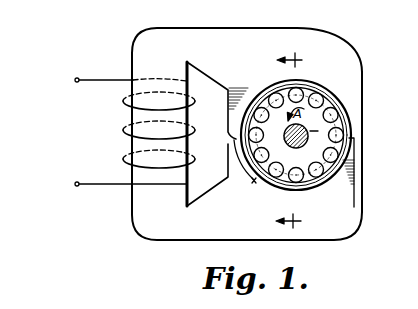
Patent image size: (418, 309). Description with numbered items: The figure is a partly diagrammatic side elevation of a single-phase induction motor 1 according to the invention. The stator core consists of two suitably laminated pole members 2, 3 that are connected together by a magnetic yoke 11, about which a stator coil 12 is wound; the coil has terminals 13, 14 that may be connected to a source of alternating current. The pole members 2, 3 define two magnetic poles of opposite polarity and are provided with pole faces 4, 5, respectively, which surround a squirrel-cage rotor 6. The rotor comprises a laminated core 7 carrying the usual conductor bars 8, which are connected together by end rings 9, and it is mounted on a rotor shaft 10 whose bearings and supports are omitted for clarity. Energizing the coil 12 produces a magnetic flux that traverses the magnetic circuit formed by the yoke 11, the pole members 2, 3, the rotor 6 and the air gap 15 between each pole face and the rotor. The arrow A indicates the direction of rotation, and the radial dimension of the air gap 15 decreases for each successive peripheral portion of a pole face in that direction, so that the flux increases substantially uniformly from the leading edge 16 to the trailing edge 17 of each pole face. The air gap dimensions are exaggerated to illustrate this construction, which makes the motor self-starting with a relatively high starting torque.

The single-phase induction motor 1 is at (213, 26).
The pole member 2 is at (340, 38).
The pole member 3 is at (354, 216).
The pole face 4 is at (334, 88).
The pole face 5 is at (322, 181).
The squirrel-cage rotor 6 is at (252, 182).
The laminated core 7 is at (342, 105).
The conductor bars 8 is at (337, 115).
The end rings 9 is at (270, 84).
The rotor shaft 10 is at (288, 146).
The magnetic yoke 11 is at (160, 133).
The stator coil 12 is at (124, 129).
The terminal 13 is at (75, 82).
The terminal 14 is at (75, 185).
The air gap 15 is at (231, 142).
The leading edge 16 is at (362, 133).
The trailing edge 17 is at (233, 135).